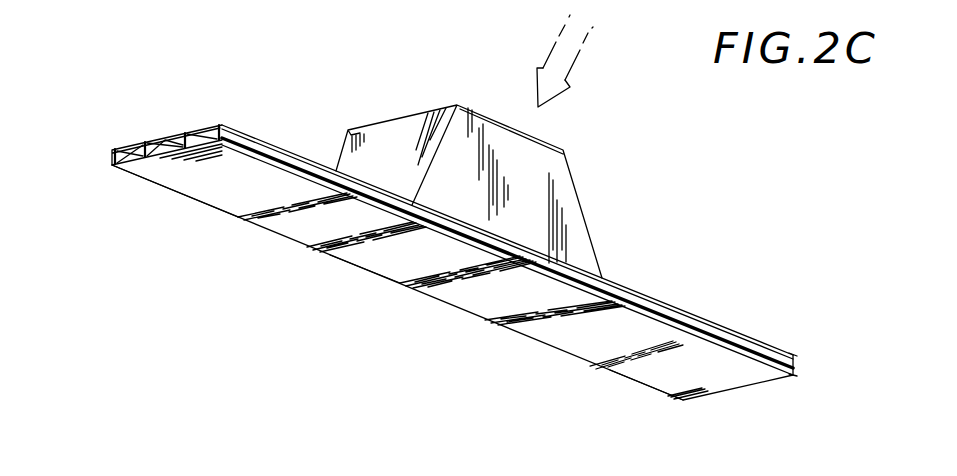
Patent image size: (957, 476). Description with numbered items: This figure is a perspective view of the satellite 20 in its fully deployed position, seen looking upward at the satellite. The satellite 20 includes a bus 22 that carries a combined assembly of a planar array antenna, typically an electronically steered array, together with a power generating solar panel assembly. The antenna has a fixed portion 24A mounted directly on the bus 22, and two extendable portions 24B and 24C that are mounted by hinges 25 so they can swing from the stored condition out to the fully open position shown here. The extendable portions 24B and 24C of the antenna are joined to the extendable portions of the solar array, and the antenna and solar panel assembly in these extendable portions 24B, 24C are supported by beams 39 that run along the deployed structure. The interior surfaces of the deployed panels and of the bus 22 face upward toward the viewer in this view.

The satellite 20 is at (143, 95).
The bus 22 is at (583, 211).
The fixed portion 24A is at (425, 282).
The extendable portion 24B is at (638, 367).
The extendable portion 24C is at (213, 195).
The hinges 25 is at (320, 250).
The beams 39 is at (224, 120).